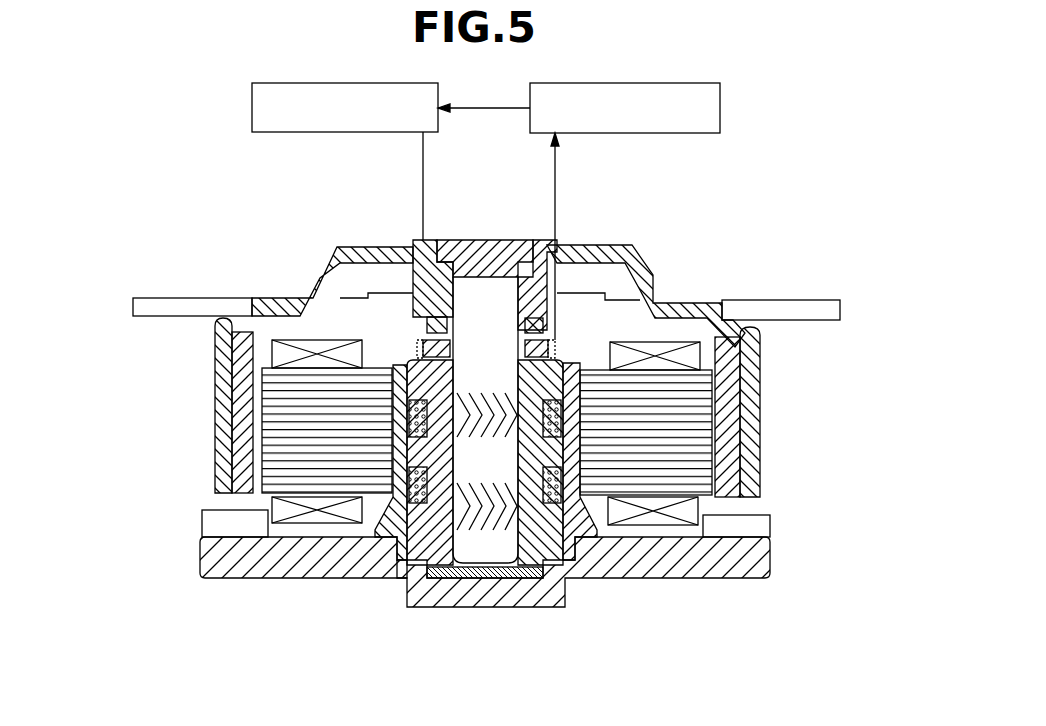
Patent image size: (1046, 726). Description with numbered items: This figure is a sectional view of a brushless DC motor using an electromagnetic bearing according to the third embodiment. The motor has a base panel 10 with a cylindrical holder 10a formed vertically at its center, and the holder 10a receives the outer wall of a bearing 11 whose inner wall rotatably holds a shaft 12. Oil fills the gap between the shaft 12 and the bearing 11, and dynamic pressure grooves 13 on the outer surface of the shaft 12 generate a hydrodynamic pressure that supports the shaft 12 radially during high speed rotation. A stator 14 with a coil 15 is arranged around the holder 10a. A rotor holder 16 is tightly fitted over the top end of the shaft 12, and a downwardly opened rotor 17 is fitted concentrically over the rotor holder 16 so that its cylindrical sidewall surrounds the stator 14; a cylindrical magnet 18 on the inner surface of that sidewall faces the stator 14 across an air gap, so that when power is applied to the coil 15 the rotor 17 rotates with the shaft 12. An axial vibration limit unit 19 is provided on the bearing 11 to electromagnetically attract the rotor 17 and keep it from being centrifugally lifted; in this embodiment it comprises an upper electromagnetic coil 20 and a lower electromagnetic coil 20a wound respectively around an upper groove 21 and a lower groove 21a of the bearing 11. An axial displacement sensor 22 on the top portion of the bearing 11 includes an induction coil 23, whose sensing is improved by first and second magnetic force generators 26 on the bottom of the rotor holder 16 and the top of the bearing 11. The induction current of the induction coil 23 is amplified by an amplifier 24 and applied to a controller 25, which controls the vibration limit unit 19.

The base panel 10 is at (272, 590).
The cylindrical holder 10a is at (580, 447).
The bearing 11 is at (530, 570).
The shaft 12 is at (453, 583).
The dynamic pressure grooves 13 is at (493, 577).
The stator 14 is at (680, 447).
The coil 15 is at (687, 357).
The rotor holder 16 is at (423, 273).
The rotor 17 is at (282, 307).
The cylindrical magnet 18 is at (240, 462).
The axial vibration limit unit 19 is at (389, 486).
The upper electromagnetic coil 20 is at (395, 380).
The lower electromagnetic coil 20a is at (377, 562).
The upper groove 21 is at (403, 463).
The lower groove 21a is at (410, 580).
The axial displacement sensor 22 is at (600, 332).
The induction coil 23 is at (562, 353).
The amplifier 24 is at (683, 134).
The controller 25 is at (252, 104).
The magnetic force generators 26 is at (400, 345).